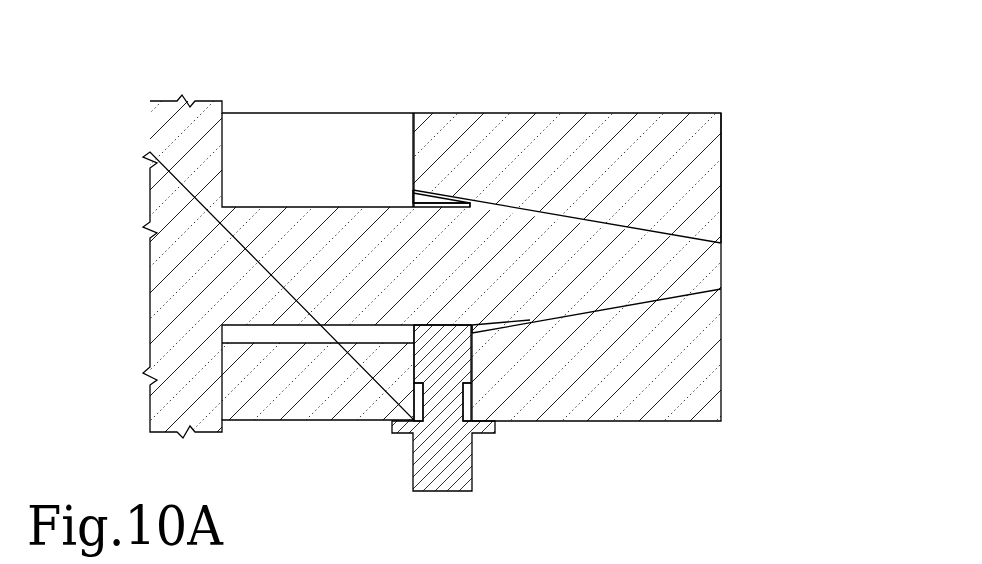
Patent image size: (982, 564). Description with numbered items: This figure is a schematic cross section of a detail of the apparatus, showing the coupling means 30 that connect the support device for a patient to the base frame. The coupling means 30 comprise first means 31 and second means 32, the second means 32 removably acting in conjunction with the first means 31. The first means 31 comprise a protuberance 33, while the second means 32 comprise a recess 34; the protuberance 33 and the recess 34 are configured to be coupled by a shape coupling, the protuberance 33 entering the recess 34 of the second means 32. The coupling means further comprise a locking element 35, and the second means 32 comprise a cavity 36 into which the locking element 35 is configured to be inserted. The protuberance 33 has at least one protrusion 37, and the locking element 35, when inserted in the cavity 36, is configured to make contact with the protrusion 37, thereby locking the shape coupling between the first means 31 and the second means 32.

The coupling means 30 is at (425, 102).
The first means 31 is at (158, 333).
The second means 32 is at (713, 143).
The protuberance 33 is at (570, 235).
The recess 34 is at (625, 312).
The locking element 35 is at (457, 468).
The cavity 36 is at (413, 390).
The protrusion 37 is at (413, 200).